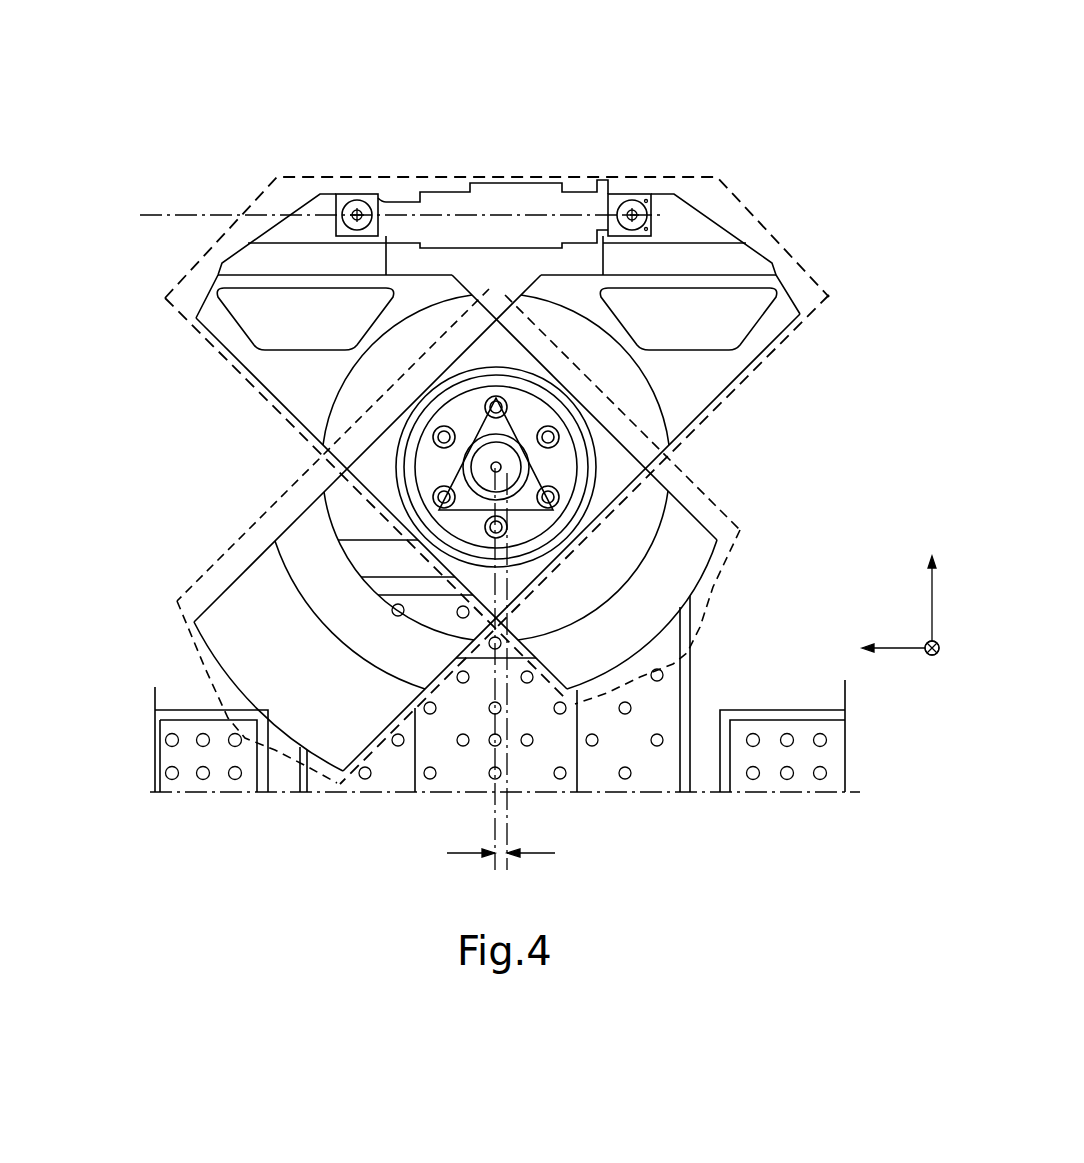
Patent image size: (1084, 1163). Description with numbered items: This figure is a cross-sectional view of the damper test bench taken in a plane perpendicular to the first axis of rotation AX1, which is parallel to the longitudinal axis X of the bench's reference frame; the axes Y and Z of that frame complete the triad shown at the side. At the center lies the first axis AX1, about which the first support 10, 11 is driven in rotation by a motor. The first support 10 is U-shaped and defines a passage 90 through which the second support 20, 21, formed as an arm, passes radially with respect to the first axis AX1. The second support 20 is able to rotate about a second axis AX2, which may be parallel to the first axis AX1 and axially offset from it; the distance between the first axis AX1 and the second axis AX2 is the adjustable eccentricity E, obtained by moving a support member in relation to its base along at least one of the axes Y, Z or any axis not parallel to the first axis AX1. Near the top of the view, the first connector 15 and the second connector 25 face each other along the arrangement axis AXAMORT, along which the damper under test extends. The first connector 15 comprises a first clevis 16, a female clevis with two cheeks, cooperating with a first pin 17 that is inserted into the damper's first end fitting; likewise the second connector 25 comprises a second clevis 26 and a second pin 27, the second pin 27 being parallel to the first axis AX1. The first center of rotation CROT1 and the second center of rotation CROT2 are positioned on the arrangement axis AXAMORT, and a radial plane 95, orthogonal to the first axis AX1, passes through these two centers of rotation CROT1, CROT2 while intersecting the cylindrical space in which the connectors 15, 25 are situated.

The first support 10 is at (567, 480).
The rotor housing casing 11 is at (785, 312).
The first connector 15 is at (527, 445).
The first clevis 16 is at (700, 230).
The first pin 17 is at (634, 212).
The second support 20 is at (540, 631).
The lower support block plate 21 is at (692, 558).
The second connector 25 is at (456, 379).
The second clevis 26 is at (323, 200).
The second pin 27 is at (358, 212).
The passage 90 is at (620, 400).
The radial plane 95 is at (130, 664).
The first center of rotation CROT1 is at (357, 212).
The second center of rotation CROT2 is at (632, 212).
The arrangement axis AXAMORT is at (177, 215).
The first axis of rotation AX1 is at (500, 466).
The second axis AX2 is at (496, 467).
The eccentricity E is at (501, 839).
The longitudinal axis X is at (941, 664).
The axis Y is at (892, 631).
The axis Z is at (943, 602).